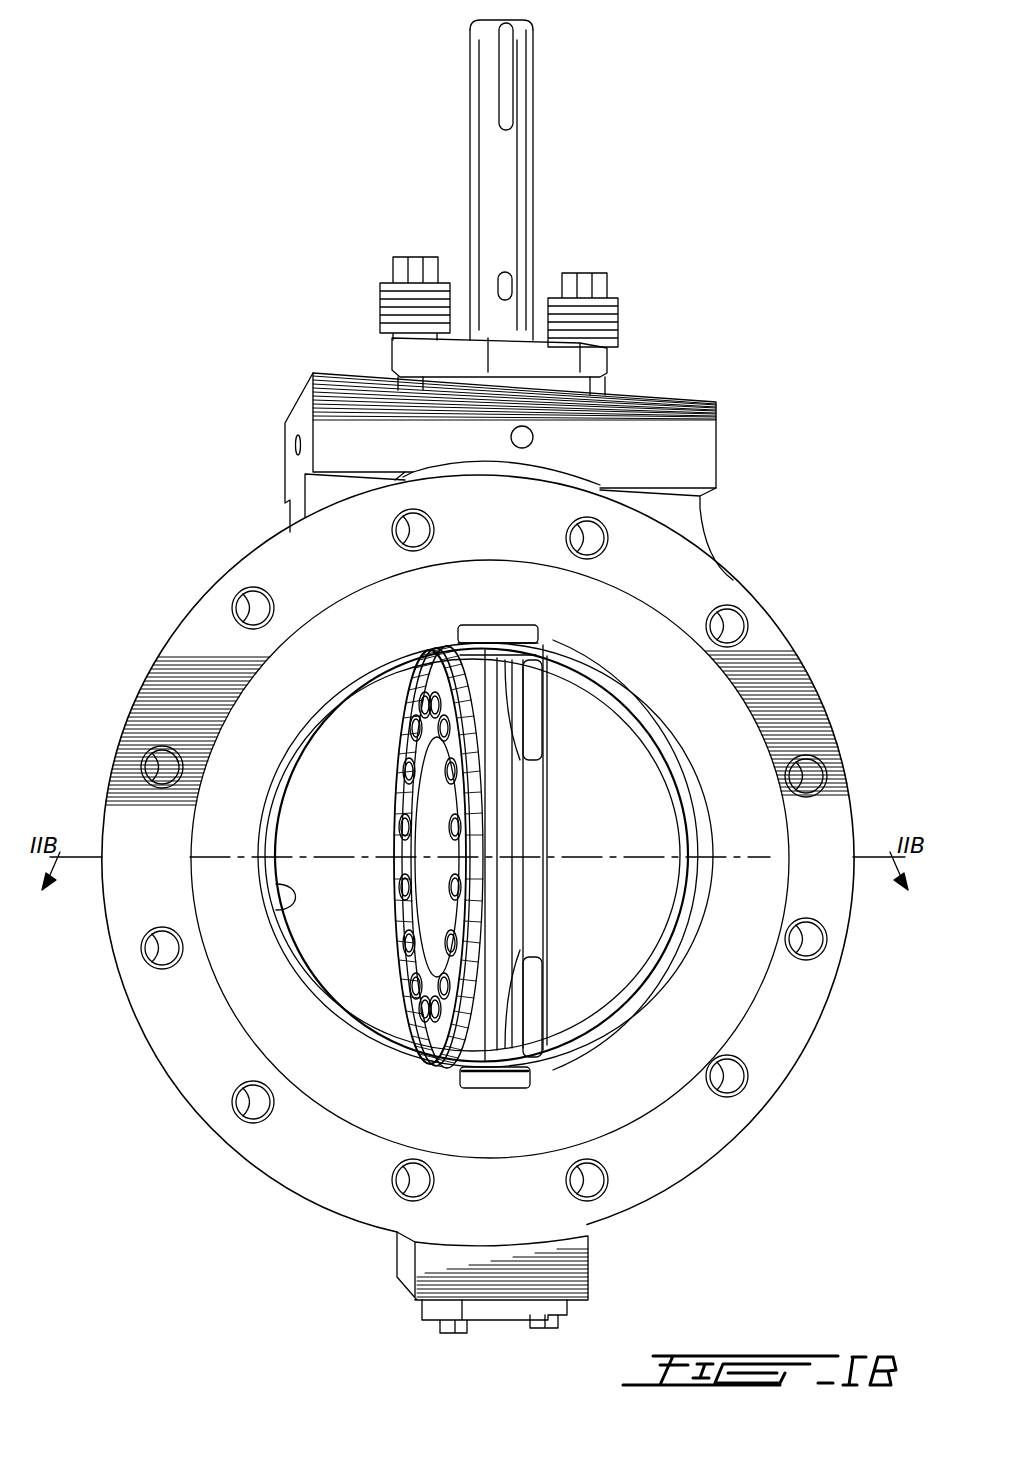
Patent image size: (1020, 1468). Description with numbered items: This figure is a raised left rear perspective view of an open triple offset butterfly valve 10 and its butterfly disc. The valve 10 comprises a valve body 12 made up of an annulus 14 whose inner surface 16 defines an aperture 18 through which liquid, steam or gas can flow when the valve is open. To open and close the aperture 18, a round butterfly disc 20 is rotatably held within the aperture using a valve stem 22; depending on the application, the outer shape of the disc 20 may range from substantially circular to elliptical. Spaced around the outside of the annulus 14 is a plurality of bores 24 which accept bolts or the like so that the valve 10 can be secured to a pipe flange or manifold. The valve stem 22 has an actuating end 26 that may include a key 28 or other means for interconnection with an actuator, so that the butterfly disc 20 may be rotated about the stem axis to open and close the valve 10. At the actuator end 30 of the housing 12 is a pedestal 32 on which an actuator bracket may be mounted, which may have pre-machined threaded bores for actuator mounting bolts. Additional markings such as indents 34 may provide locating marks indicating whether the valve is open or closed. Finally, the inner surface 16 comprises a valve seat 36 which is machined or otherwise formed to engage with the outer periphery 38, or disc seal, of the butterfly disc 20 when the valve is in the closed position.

The butterfly valve 10 is at (240, 514).
The valve body 12 is at (716, 452).
The annulus 14 is at (203, 667).
The inner surface 16 is at (672, 745).
The aperture 18 is at (617, 890).
The butterfly disc 20 is at (495, 925).
The valve stem 22 is at (507, 188).
The bores 24 is at (162, 952).
The actuating end 26 is at (486, 22).
The key 28 is at (510, 70).
The actuator end 30 is at (342, 372).
The pedestal 32 is at (670, 420).
The indents 34 is at (531, 437).
The valve seat 36 is at (288, 911).
The outer periphery 38 is at (478, 1048).